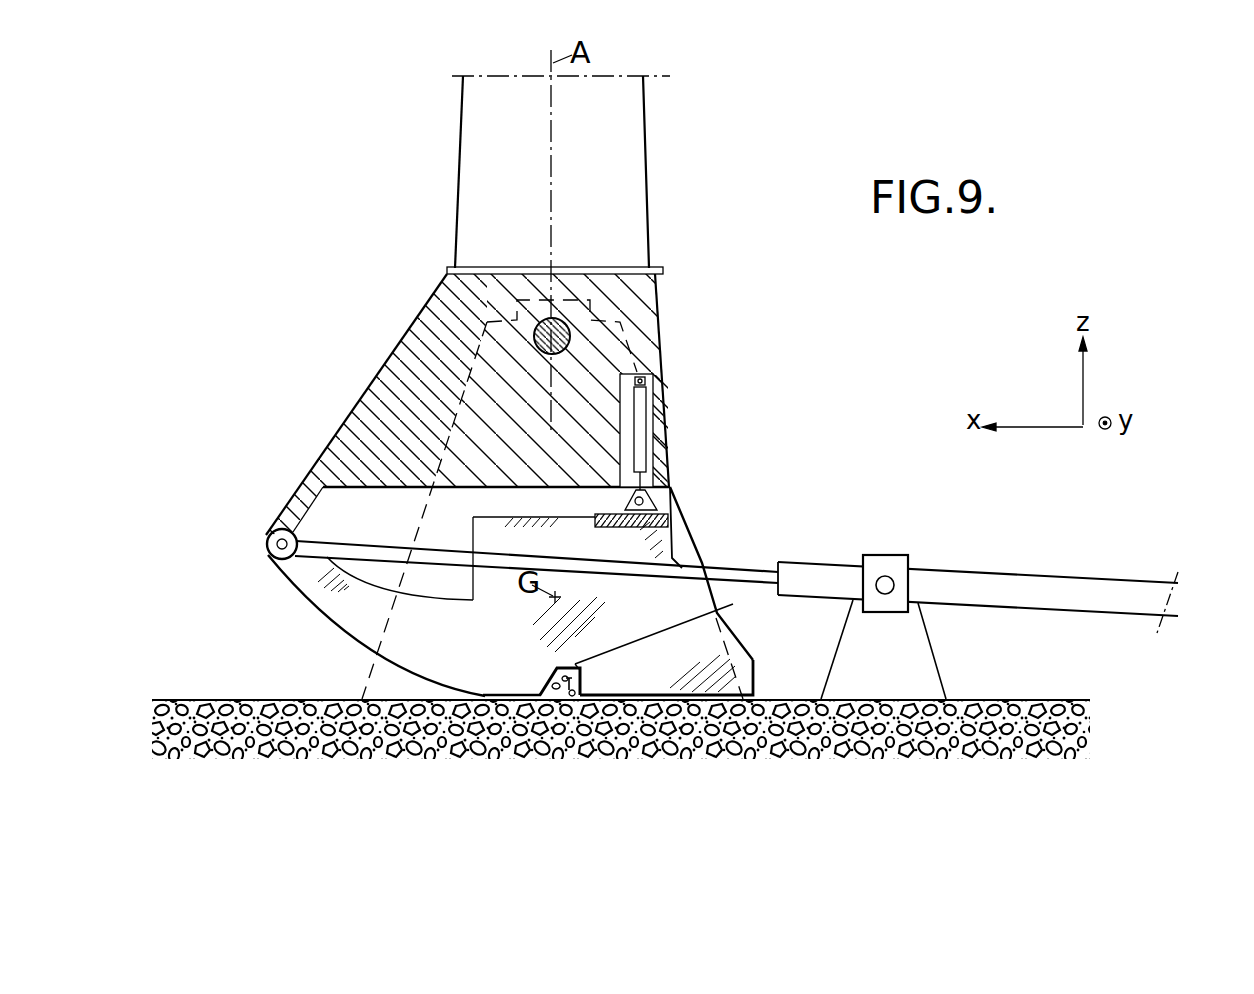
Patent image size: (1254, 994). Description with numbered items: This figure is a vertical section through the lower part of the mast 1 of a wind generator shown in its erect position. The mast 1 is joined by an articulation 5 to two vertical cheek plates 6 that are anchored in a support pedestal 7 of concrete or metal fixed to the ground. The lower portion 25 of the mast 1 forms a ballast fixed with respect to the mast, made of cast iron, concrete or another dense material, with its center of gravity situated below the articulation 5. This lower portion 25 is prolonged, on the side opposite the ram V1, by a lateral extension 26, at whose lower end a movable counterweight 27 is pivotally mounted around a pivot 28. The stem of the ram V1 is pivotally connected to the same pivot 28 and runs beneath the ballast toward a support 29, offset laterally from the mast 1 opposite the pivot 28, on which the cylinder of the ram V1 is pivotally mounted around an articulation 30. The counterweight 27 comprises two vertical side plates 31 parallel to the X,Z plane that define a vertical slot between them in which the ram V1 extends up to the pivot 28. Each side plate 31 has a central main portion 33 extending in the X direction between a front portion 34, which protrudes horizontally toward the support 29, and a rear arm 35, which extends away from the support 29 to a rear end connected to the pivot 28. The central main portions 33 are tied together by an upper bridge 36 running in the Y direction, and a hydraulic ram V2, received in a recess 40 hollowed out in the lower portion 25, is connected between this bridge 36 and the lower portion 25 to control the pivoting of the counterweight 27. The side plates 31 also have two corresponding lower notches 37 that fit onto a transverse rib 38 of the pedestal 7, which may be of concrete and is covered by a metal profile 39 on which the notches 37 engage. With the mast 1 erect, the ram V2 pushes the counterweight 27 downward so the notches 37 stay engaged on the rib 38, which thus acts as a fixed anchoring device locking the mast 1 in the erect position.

The mast 1 is at (615, 158).
The articulation 5 is at (558, 332).
The vertical cheek plates 6 is at (397, 682).
The support pedestal 7 is at (197, 698).
The lower portion of the mast 25 is at (650, 355).
The lateral extension 26 is at (427, 370).
The movable counterweight 27 is at (672, 535).
The pivot 28 is at (273, 537).
The support 29 is at (907, 655).
The articulation 30 is at (885, 582).
The vertical side plates 31 is at (762, 677).
The central main portion 33 is at (633, 587).
The front portion 34 is at (737, 660).
The rear arm 35 is at (347, 607).
The upper bridge 36 is at (662, 510).
The lower notches 37 is at (673, 627).
The transverse rib 38 is at (569, 690).
The metal profile 39 is at (562, 683).
The recess 40 is at (640, 385).
The ram V1 is at (1087, 578).
The hydraulic ram V2 is at (640, 430).